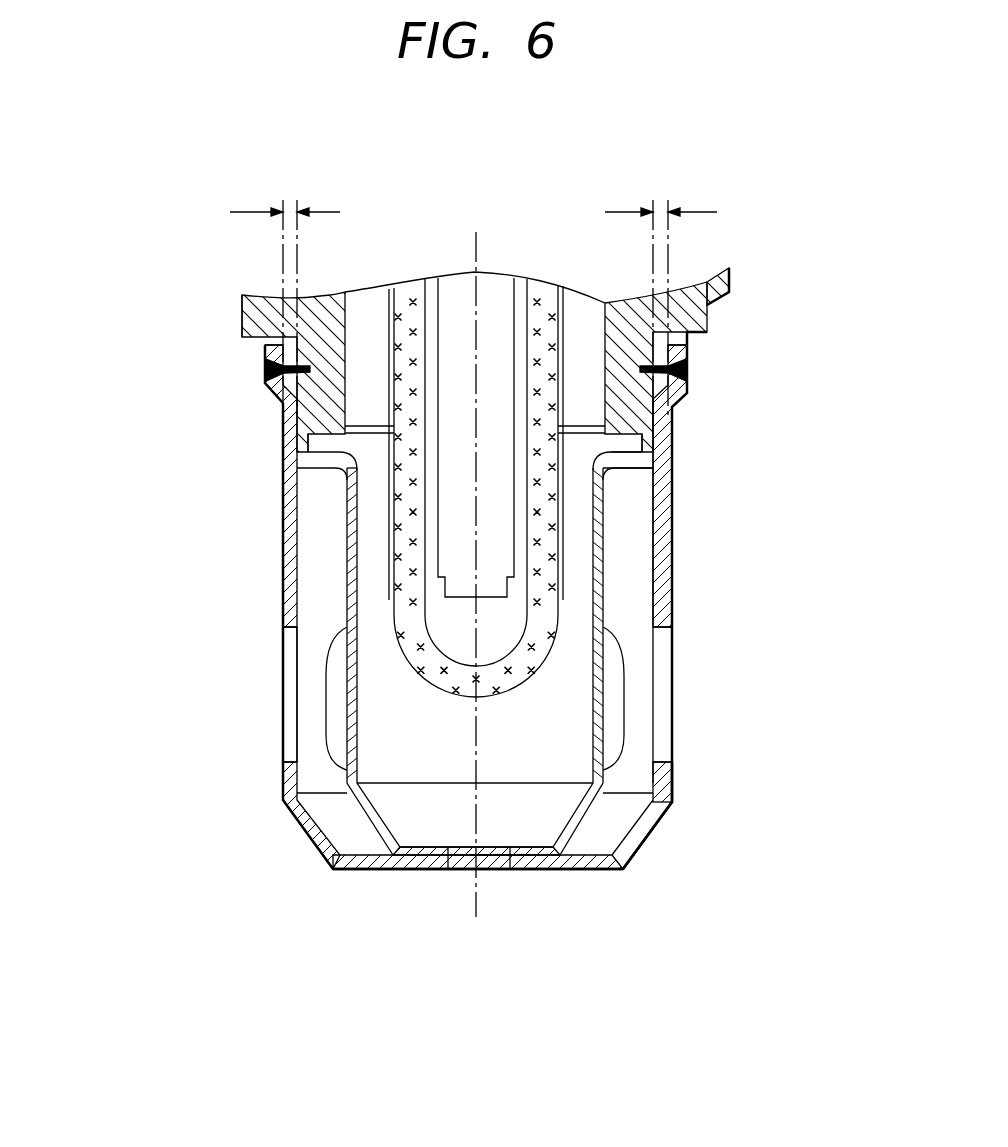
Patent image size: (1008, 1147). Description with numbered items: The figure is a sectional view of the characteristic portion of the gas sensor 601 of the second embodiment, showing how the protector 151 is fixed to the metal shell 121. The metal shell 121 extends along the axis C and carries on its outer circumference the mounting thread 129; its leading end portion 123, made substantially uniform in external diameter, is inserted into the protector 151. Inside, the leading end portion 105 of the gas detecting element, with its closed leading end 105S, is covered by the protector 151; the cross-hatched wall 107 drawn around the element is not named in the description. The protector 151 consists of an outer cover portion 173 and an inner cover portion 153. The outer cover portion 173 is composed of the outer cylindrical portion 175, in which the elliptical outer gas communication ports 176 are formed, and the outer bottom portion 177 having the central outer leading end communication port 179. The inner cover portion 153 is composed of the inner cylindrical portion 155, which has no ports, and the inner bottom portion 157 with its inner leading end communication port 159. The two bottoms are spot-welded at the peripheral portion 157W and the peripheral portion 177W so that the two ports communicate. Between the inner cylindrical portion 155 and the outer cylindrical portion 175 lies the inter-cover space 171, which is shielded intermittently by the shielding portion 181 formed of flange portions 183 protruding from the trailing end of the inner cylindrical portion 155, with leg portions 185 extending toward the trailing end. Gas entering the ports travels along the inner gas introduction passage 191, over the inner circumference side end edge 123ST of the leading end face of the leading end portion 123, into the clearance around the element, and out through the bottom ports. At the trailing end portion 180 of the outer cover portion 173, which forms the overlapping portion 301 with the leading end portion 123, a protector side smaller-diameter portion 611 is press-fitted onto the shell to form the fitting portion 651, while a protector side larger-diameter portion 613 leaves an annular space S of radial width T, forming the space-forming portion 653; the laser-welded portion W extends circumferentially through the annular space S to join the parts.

The gas sensor 601 is at (736, 218).
The metal shell 121 is at (752, 272).
The mounting thread 129 is at (733, 294).
The leading end portion 123 is at (323, 377).
The inner circumference side end edge 123ST is at (340, 466).
The trailing end portion 180 is at (86, 300).
The protector side larger-diameter portion 613 is at (266, 350).
The protector side smaller-diameter portion 611 is at (266, 393).
The fitting portion 651 is at (686, 412).
The space-forming portion 653 is at (702, 366).
The overlapping portion 301 is at (272, 421).
The inner gas introduction passage 191 is at (328, 480).
The inner cylindrical portion 155 is at (345, 563).
The inter-cover space 171 is at (318, 737).
The leg portions 185 is at (672, 443).
The shielding portion 181 is at (608, 455).
The flange portions 183 is at (672, 512).
The protector 151 is at (672, 555).
The outer cylindrical portion 175 is at (672, 567).
The crucible wall 107 is at (543, 568).
The leading end portion 105 is at (543, 660).
The leading end 105S is at (490, 691).
The outer gas communication ports 176 is at (625, 727).
The inner cover portion 153 is at (672, 773).
The outer cover portion 173 is at (672, 800).
The inner bottom portion 157 is at (397, 871).
The peripheral portion 157W is at (432, 871).
The inner leading end communication port 159 is at (469, 871).
The outer leading end communication port 179 is at (499, 871).
The peripheral portion 177W is at (550, 871).
The outer bottom portion 177 is at (600, 869).
The annular space S is at (272, 296).
The laser-welded portion W is at (692, 380).
The axis C is at (475, 560).
The width T is at (473, 298).